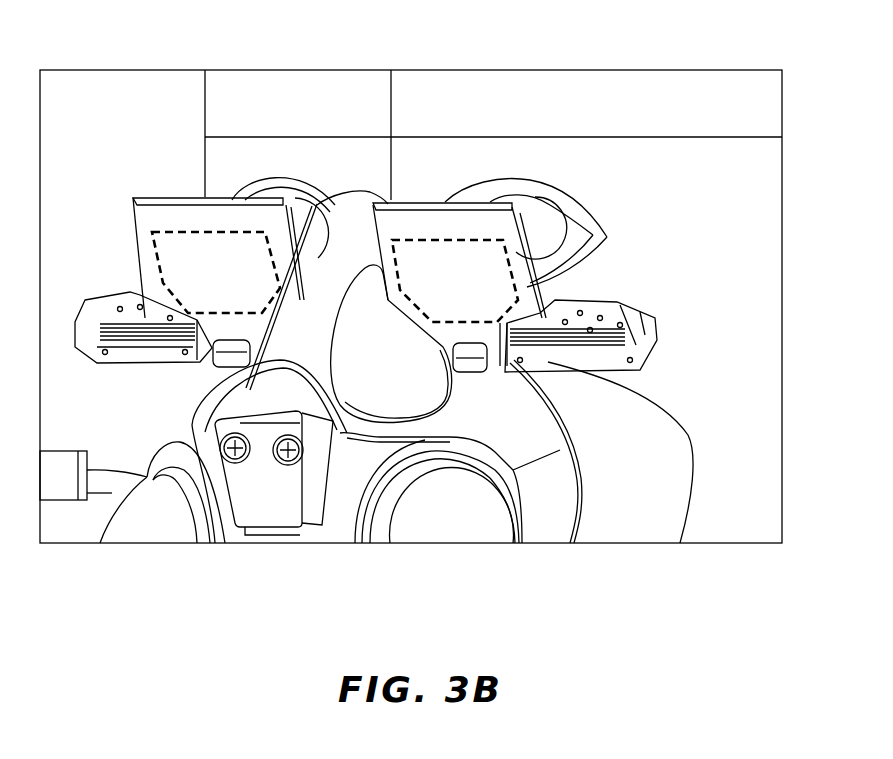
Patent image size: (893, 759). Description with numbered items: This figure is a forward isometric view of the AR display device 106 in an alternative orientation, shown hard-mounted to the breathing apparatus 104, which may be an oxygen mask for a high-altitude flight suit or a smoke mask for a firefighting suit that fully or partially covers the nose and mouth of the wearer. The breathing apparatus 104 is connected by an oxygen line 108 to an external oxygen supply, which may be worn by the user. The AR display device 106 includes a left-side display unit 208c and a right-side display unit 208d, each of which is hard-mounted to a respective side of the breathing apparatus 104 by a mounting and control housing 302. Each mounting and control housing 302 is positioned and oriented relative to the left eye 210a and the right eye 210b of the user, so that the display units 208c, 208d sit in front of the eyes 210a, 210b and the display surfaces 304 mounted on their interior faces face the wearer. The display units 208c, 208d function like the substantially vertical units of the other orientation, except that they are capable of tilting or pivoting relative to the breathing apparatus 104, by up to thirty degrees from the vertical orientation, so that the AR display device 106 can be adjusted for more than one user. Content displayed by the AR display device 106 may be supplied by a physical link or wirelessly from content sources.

The breathing apparatus 104 is at (352, 480).
The AR display device 106 is at (117, 156).
The oxygen line 108 is at (715, 165).
The left-side display unit 208c is at (417, 217).
The right-side display unit 208d is at (140, 222).
The left eye 210a is at (540, 240).
The right eye 210b is at (300, 210).
The mounting and control housing 302 is at (140, 350).
The display surfaces 304 is at (222, 292).